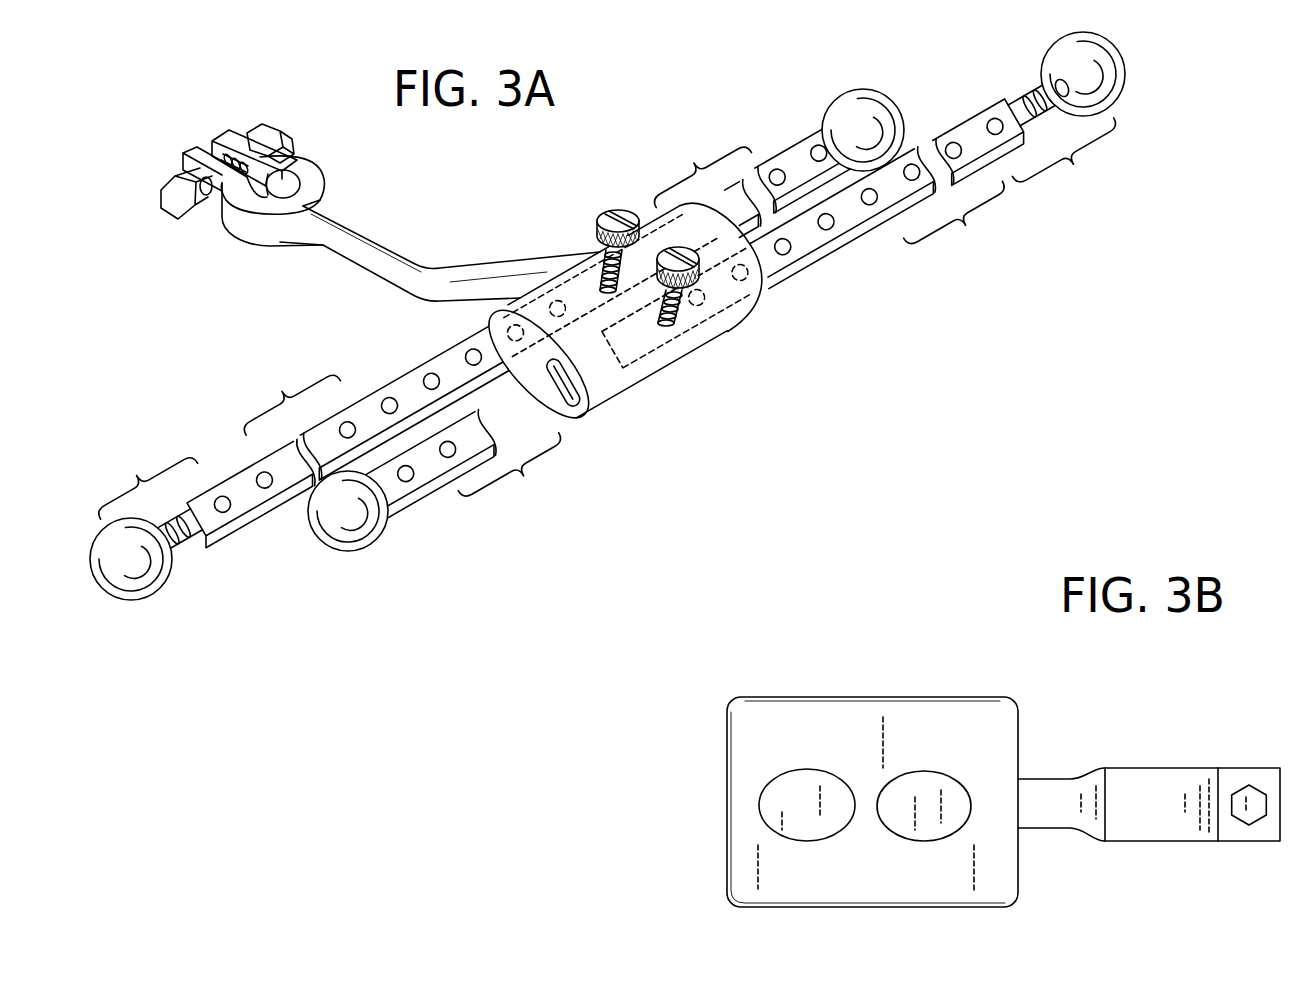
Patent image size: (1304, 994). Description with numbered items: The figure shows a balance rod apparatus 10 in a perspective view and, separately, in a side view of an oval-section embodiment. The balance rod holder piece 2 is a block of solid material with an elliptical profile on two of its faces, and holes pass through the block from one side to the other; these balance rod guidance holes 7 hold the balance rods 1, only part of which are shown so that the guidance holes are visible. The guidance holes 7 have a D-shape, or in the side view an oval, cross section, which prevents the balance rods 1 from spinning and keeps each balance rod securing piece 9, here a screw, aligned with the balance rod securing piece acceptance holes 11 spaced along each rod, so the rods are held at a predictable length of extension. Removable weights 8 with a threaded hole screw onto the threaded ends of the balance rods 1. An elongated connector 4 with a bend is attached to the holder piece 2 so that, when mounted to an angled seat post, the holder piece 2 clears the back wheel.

In FIG. 3A, the balance rod 1 is at (400, 375).
In FIG. 3B, the balance rod 1 is at (803, 800).
In FIG. 3A, the balance rod holder piece 2 is at (640, 383).
In FIG. 3B, the balance rod holder piece 2 is at (930, 697).
In FIG. 3A, the elongated connector 4 is at (392, 247).
In FIG. 3B, the elongated connector 4 is at (1158, 772).
In FIG. 3A, the balance rod guidance hole 7 is at (572, 392).
In FIG. 3A, the weight 8 is at (1124, 102).
In FIG. 3A, the balance rod securing piece 9 is at (602, 218).
In FIG. 3A, the balance rod apparatus 10 is at (506, 542).
In FIG. 3B, the balance rod apparatus 10 is at (1100, 880).
In FIG. 3A, the balance rod securing piece acceptance hole 11 is at (833, 226).